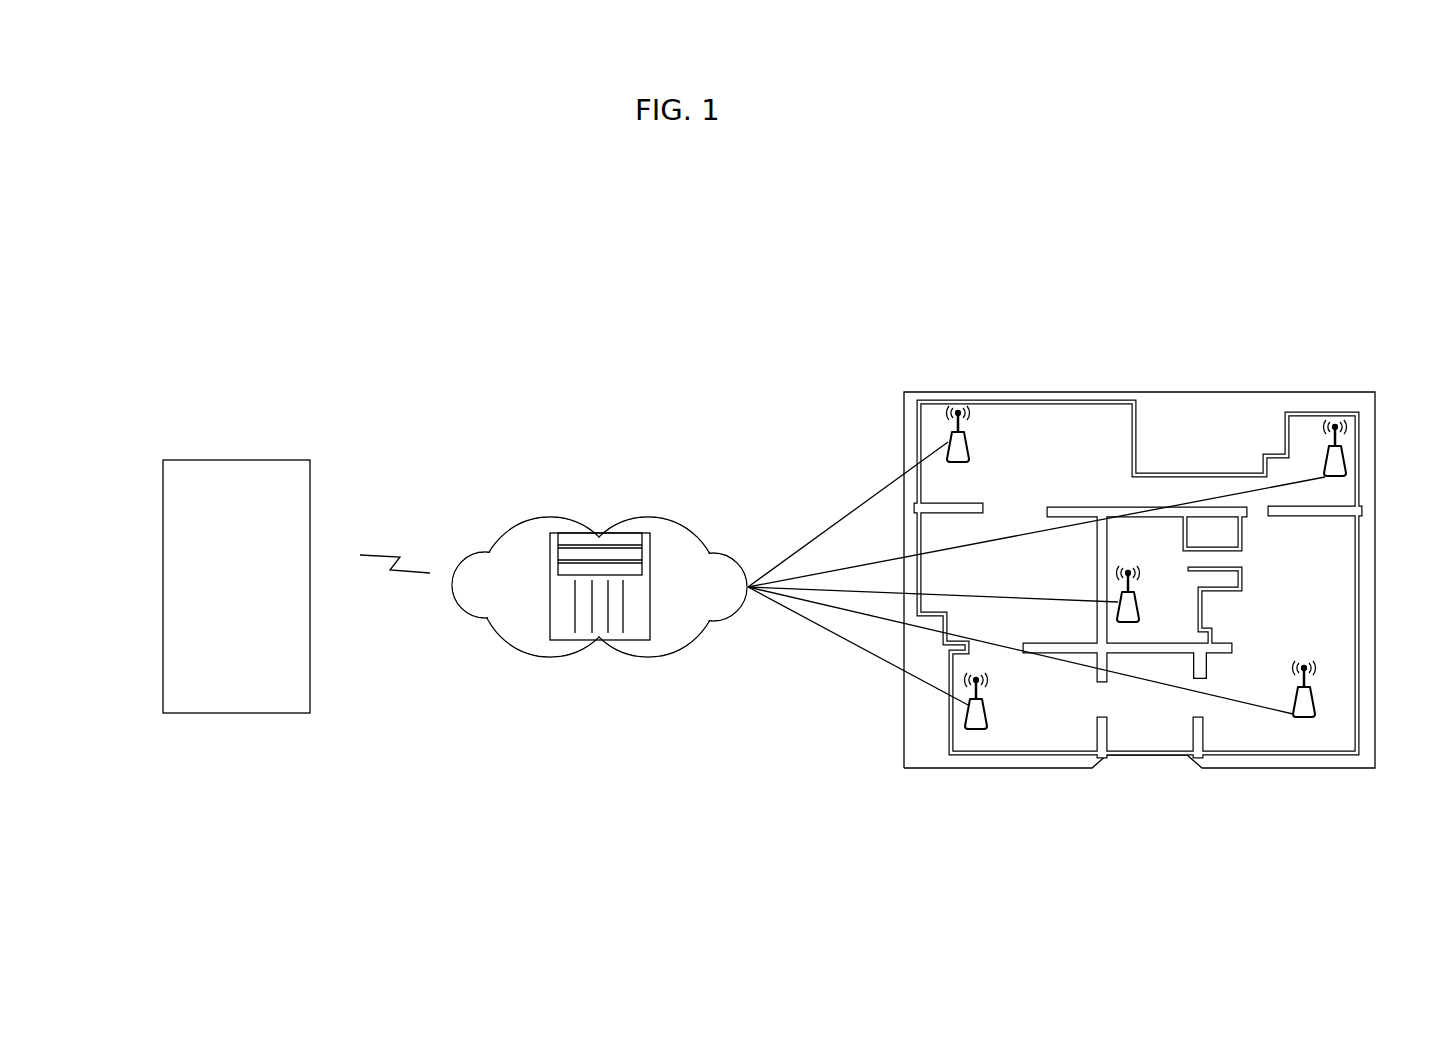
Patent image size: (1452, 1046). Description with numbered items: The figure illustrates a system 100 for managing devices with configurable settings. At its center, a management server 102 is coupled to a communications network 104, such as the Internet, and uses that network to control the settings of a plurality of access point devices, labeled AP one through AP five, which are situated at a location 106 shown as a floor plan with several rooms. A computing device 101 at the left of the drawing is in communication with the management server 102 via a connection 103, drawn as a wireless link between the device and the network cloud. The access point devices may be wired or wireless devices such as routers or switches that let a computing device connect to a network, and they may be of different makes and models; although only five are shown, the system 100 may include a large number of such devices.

The system 100 is at (1294, 128).
The computing device 101 is at (235, 460).
The management server 102 is at (552, 535).
The connection 103 is at (400, 557).
The communications network 104 is at (643, 518).
The location 106 is at (1217, 392).